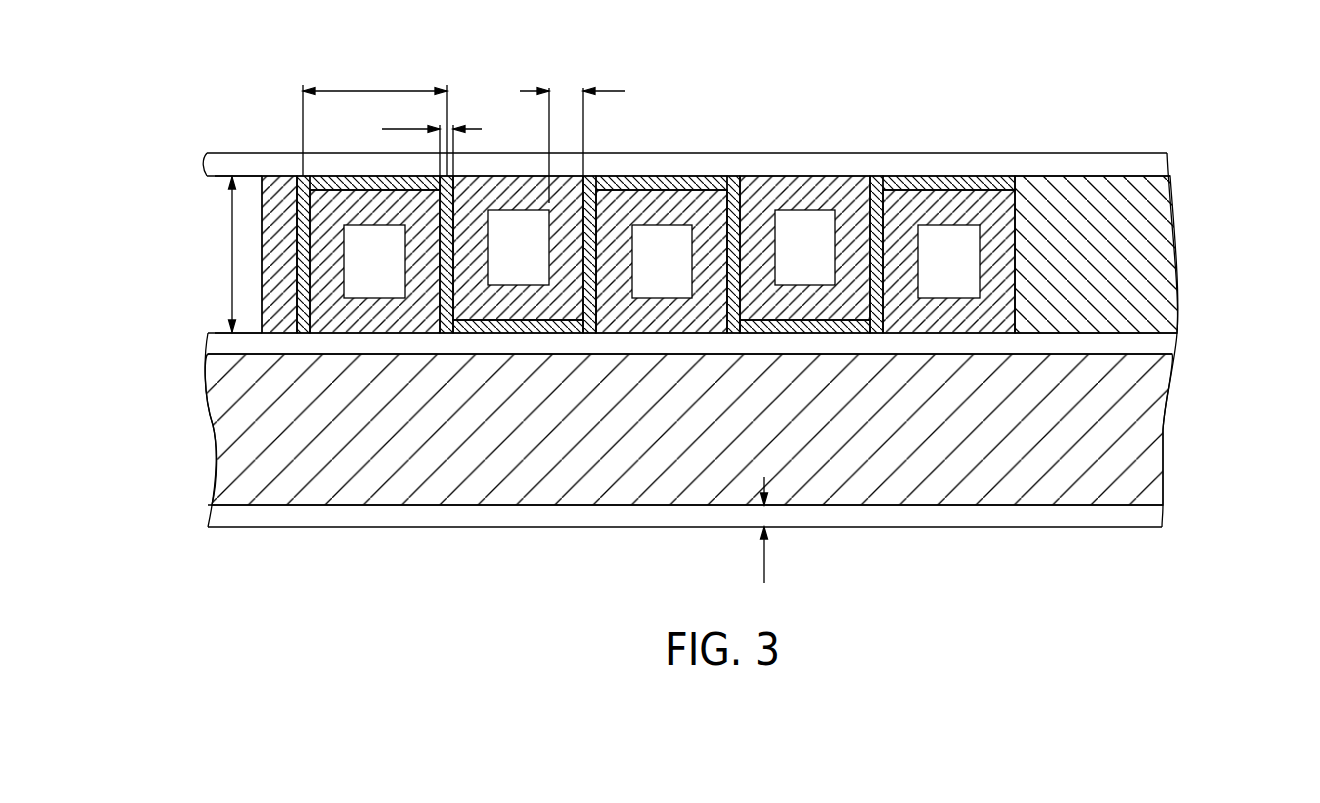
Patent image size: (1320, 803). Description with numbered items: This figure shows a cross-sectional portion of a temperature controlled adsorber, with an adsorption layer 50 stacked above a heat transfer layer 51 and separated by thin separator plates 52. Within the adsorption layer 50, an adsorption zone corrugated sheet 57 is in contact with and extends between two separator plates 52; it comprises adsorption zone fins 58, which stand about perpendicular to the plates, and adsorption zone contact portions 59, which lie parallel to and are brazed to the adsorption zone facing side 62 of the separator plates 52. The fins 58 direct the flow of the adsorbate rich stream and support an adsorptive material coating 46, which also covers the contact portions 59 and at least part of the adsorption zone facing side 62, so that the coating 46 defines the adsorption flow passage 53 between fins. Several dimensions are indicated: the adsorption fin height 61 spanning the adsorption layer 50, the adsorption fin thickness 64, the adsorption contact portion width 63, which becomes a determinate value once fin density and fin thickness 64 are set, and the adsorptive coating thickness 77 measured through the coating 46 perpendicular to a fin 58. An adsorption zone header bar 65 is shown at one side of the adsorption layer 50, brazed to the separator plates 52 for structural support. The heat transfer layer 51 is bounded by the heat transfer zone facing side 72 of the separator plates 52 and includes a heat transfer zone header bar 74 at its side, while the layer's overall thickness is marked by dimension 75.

The adsorptive material coating 46 is at (694, 196).
The adsorption layer 50 is at (706, 188).
The heat transfer layer 51 is at (701, 468).
The separator plate 52 is at (1140, 160).
The adsorption flow passage 53 is at (963, 273).
The adsorption zone corrugated sheet 57 is at (942, 193).
The adsorption zone fin 58 is at (885, 232).
The adsorption zone contact portion 59 is at (872, 102).
The adsorption fin height 61 is at (230, 255).
The adsorption zone facing side 62 is at (222, 177).
The adsorption contact portion width 63 is at (376, 88).
The adsorption fin thickness 64 is at (382, 129).
The adsorption zone header bar 65 is at (1058, 203).
The heat transfer zone facing side 72 is at (284, 357).
The heat transfer zone header bar 74 is at (224, 432).
The substrate thickness 75 is at (762, 567).
The adsorptive coating thickness 77 is at (625, 91).